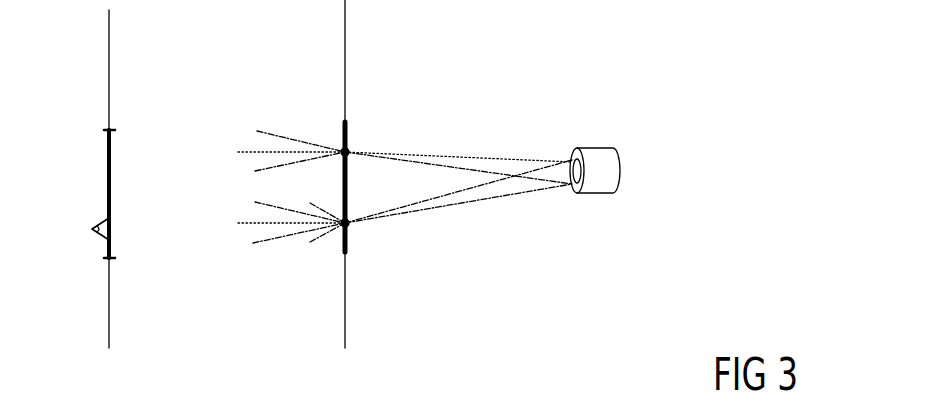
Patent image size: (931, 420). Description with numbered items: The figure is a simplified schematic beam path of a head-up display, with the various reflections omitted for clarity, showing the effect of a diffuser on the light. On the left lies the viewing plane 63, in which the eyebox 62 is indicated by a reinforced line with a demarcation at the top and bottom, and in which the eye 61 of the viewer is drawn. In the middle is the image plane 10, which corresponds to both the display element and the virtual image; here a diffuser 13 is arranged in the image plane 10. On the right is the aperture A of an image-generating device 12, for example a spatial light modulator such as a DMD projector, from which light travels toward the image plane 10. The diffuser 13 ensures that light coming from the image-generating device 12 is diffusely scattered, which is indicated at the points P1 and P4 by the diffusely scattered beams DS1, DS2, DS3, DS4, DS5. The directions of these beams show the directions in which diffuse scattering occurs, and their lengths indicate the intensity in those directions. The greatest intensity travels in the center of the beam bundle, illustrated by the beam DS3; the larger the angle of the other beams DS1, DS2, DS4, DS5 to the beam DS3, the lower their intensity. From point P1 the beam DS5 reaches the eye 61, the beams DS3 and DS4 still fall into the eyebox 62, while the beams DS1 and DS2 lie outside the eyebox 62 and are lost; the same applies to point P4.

The viewing plane 63 is at (109, 38).
The eyebox 62 is at (109, 165).
The eye 61 is at (103, 237).
The image plane 10 is at (348, 38).
The diffuser 13 is at (348, 194).
The point P1 is at (350, 151).
The point P4 is at (348, 225).
The diffusely scattered beam DS1 is at (319, 133).
The diffusely scattered beam DS2 is at (265, 132).
The diffusely scattered beam DS3 is at (250, 150).
The diffusely scattered beam DS4 is at (255, 173).
The diffusely scattered beam DS5 is at (316, 168).
The image-generating device 12 is at (602, 157).
The aperture A is at (572, 162).